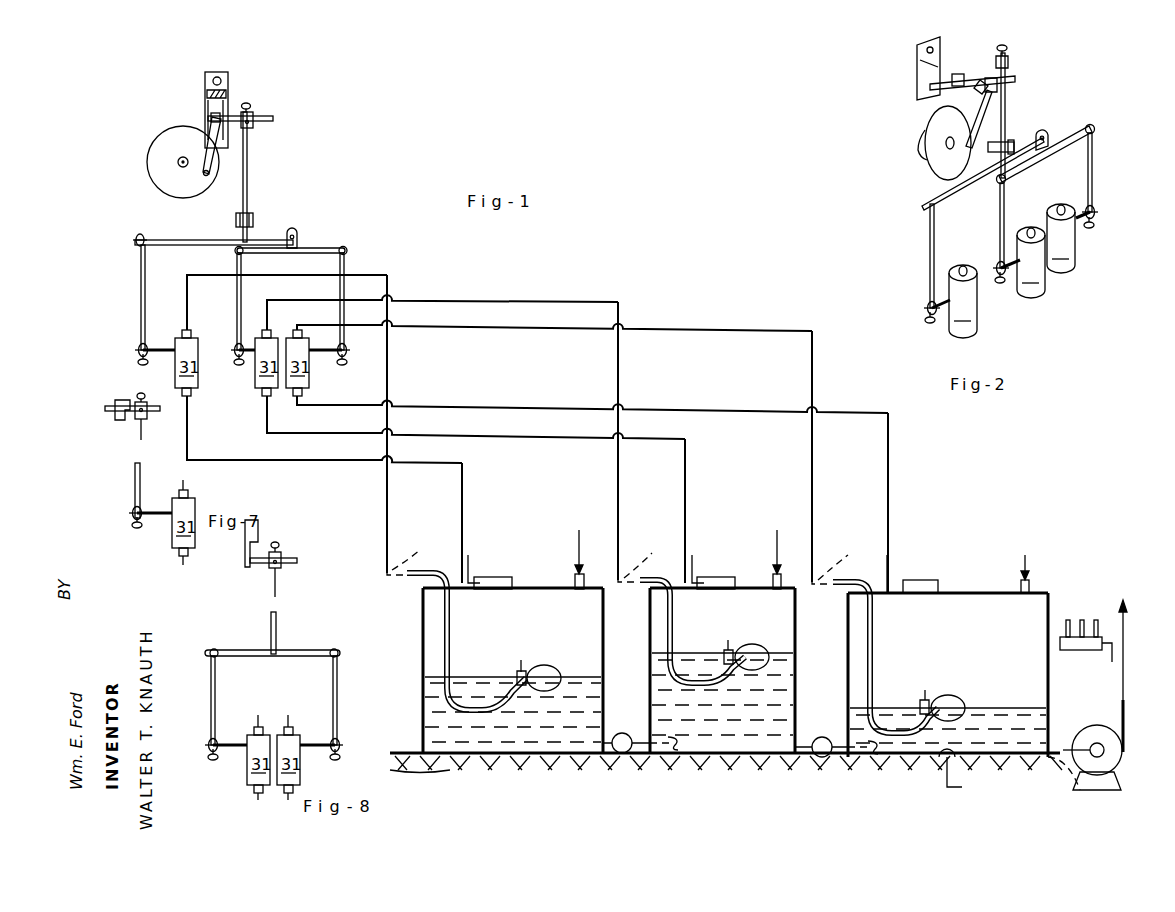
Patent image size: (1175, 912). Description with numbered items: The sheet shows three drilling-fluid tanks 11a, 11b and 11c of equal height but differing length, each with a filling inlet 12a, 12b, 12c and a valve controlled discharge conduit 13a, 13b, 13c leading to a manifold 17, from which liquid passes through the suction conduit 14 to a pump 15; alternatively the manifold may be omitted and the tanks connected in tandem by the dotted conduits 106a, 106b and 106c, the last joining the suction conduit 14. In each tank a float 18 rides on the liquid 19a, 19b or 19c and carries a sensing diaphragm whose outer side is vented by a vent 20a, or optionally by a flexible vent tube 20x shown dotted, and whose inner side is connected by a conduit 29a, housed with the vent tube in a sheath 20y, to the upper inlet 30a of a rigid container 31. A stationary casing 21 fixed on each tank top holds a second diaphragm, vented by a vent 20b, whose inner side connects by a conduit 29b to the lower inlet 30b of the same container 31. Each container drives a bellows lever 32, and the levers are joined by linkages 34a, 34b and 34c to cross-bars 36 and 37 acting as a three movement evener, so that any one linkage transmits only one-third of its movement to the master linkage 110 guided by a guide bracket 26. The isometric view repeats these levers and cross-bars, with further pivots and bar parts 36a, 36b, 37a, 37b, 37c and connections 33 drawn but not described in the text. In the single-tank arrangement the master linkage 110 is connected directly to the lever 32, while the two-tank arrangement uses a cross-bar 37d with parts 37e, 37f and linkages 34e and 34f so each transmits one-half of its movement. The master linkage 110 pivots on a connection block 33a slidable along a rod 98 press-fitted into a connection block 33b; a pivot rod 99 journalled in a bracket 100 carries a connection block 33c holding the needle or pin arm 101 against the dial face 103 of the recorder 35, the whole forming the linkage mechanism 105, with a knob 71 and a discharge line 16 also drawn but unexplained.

In FIG. 1, the tank 11a is at (533, 585).
In FIG. 1, the tank 11b is at (745, 588).
In FIG. 1, the tank 11c is at (968, 590).
In FIG. 1, the filling inlet 12a is at (587, 578).
In FIG. 1, the filling inlet 12b is at (783, 578).
In FIG. 1, the filling inlet 12c is at (1030, 580).
In FIG. 1, the valve controlled discharge conduit 13a is at (625, 733).
In FIG. 1, the valve controlled discharge conduit 13b is at (825, 737).
In FIG. 1, the valve controlled discharge conduit 13c is at (960, 790).
In FIG. 1, the suction conduit 14 is at (1112, 660).
In FIG. 1, the pump 15 is at (1100, 726).
In FIG. 1, the discharge pipe 16 is at (1124, 695).
In FIG. 1, the manifold 17 is at (1068, 652).
In FIG. 1, the float 18 is at (553, 668).
In FIG. 1, the liquid 19a is at (482, 676).
In FIG. 1, the liquid 19b is at (776, 650).
In FIG. 1, the liquid 19c is at (888, 706).
In FIG. 1, the vent 20a is at (522, 660).
In FIG. 1, the vent 20b is at (470, 555).
In FIG. 1, the flexible vent tube 20x is at (626, 553).
In FIG. 1, the sheath 20y is at (450, 630).
In FIG. 1, the casing or housing 21 is at (510, 576).
In FIG. 1, the guide bracket 26 is at (236, 220).
In FIG. 2, the guide bracket 26 is at (1008, 140).
In FIG. 1, the conduit 29a is at (388, 522).
In FIG. 7, the conduit 29a is at (183, 486).
In FIG. 8, the conduit 29a is at (256, 722).
In FIG. 1, the conduit 29b is at (463, 466).
In FIG. 7, the conduit 29b is at (184, 562).
In FIG. 8, the conduit 29b is at (288, 800).
In FIG. 1, the upper inlet 30a is at (186, 328).
In FIG. 1, the lower inlet 30b is at (188, 398).
In FIG. 1, the rigid container 31 is at (242, 363).
In FIG. 7, the rigid container 31 is at (184, 523).
In FIG. 8, the rigid container 31 is at (274, 760).
In FIG. 2, the rigid container 31 is at (1012, 271).
In FIG. 1, the bellows lever 32 is at (138, 362).
In FIG. 7, the bellows lever 32 is at (132, 525).
In FIG. 8, the bellows lever 32 is at (208, 760).
In FIG. 2, the bellows lever 32 is at (924, 321).
In FIG. 1, the pivot 33 is at (138, 346).
In FIG. 7, the pivot 33 is at (132, 511).
In FIG. 8, the pivot 33 is at (208, 740).
In FIG. 2, the pivot 33 is at (926, 306).
In FIG. 1, the connection block 33a is at (254, 115).
In FIG. 7, the connection block 33a is at (280, 567).
In FIG. 2, the connection block 33a is at (998, 80).
In FIG. 1, the connection block 33b is at (210, 92).
In FIG. 2, the connection block 33b is at (972, 60).
In FIG. 2, the connection block 33c is at (1001, 46).
In FIG. 1, the linkage 34a is at (141, 285).
In FIG. 2, the linkage 34a is at (930, 245).
In FIG. 1, the linkage 34b is at (237, 257).
In FIG. 2, the linkage 34b is at (1000, 210).
In FIG. 1, the linkage 34c is at (347, 262).
In FIG. 2, the linkage 34c is at (1092, 168).
In FIG. 8, the link 34e is at (211, 690).
In FIG. 8, the linkage 34f is at (338, 690).
In FIG. 1, the recorder 35 is at (178, 163).
In FIG. 2, the recorder 35 is at (922, 145).
In FIG. 1, the cross-bar 36 is at (140, 234).
In FIG. 1, the bar 36a is at (205, 240).
In FIG. 2, the bar 36a is at (935, 196).
In FIG. 1, the tab 36b is at (290, 232).
In FIG. 2, the tab 36b is at (1046, 134).
In FIG. 1, the cross-bar 37 is at (327, 246).
In FIG. 2, the cross-bar 37 is at (1102, 130).
In FIG. 1, the lever pivot 37a is at (322, 250).
In FIG. 2, the lever pivot 37a is at (1091, 126).
In FIG. 1, the lever pivot 37b is at (280, 258).
In FIG. 2, the lever pivot 37b is at (980, 200).
In FIG. 1, the lever 37c is at (330, 248).
In FIG. 2, the lever 37c is at (1080, 170).
In FIG. 8, the bar 37d is at (326, 650).
In FIG. 8, the pivot 37e is at (255, 656).
In FIG. 8, the pivot 37f is at (312, 656).
In FIG. 1, the knob 71 is at (247, 104).
In FIG. 7, the knob 71 is at (278, 546).
In FIG. 2, the knob 71 is at (1006, 56).
In FIG. 1, the rod 98 is at (273, 118).
In FIG. 7, the rod 98 is at (260, 558).
In FIG. 2, the rod 98 is at (1012, 76).
In FIG. 1, the pivot rod 99 is at (210, 115).
In FIG. 2, the pivot rod 99 is at (990, 84).
In FIG. 1, the bracket 100 is at (222, 72).
In FIG. 7, the bracket 100 is at (246, 540).
In FIG. 2, the bracket 100 is at (917, 58).
In FIG. 1, the needle or pin arm 101 is at (212, 130).
In FIG. 2, the needle or pin arm 101 is at (984, 98).
In FIG. 1, the dial face 103 is at (170, 150).
In FIG. 2, the dial face 103 is at (948, 163).
In FIG. 1, the linkage mechanism 105 is at (242, 73).
In FIG. 7, the linkage mechanism 105 is at (258, 577).
In FIG. 2, the linkage mechanism 105 is at (930, 108).
In FIG. 1, the tandem conduit 106a is at (672, 738).
In FIG. 1, the tandem conduit 106b is at (860, 740).
In FIG. 1, the tandem conduit 106c is at (1078, 790).
In FIG. 1, the master linkage 110 is at (248, 165).
In FIG. 7, the master linkage 110 is at (130, 477).
In FIG. 8, the master linkage 110 is at (270, 630).
In FIG. 2, the master linkage 110 is at (1003, 115).